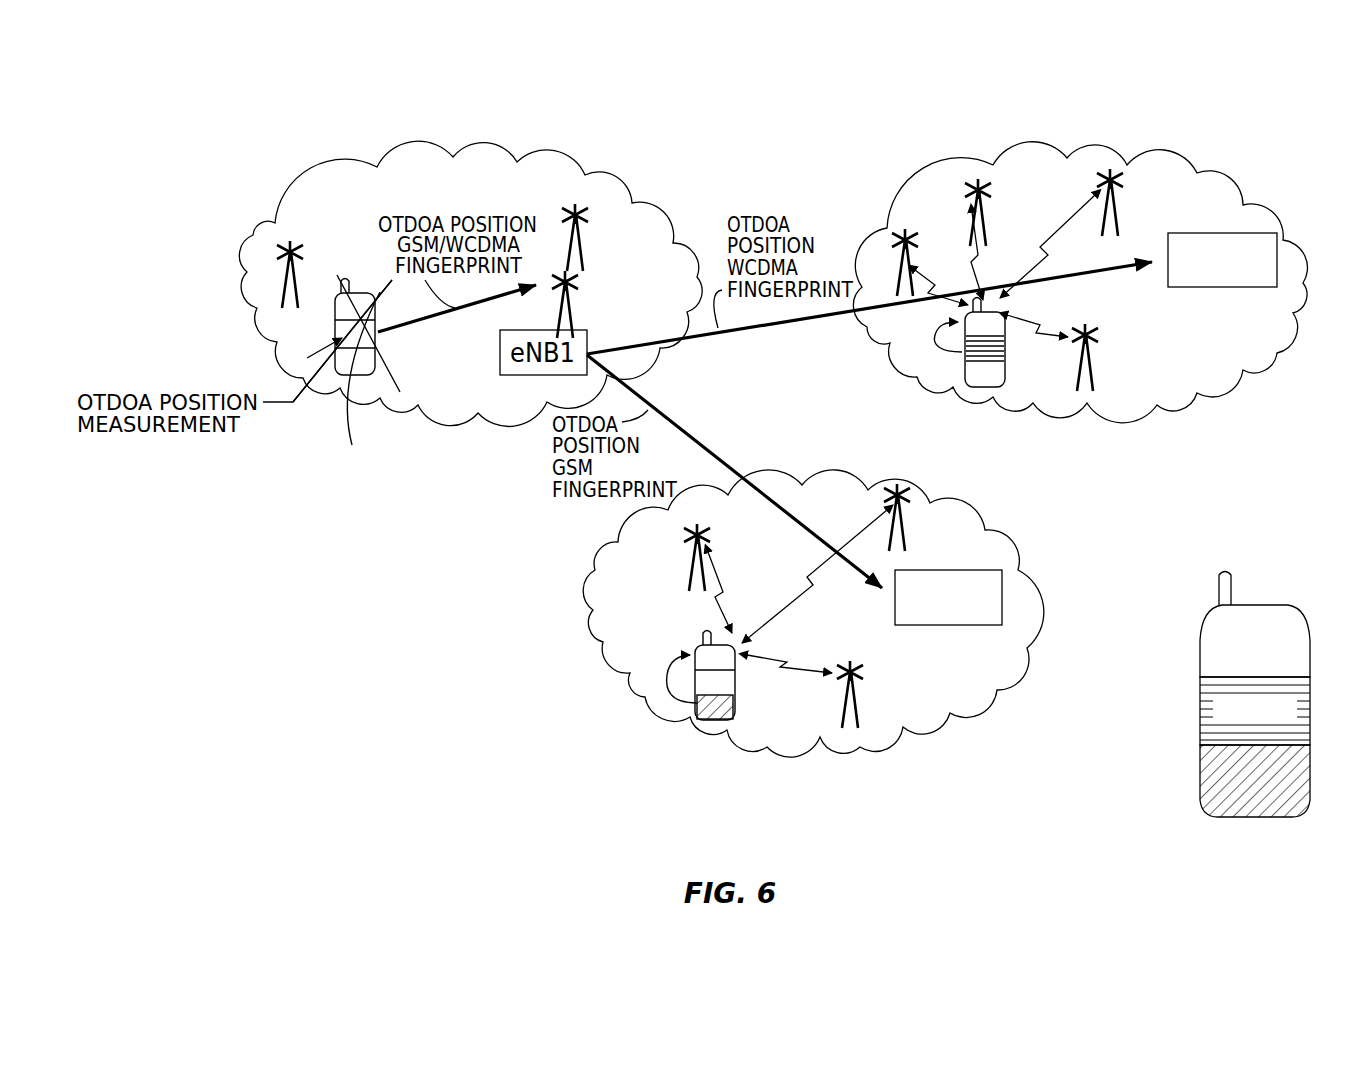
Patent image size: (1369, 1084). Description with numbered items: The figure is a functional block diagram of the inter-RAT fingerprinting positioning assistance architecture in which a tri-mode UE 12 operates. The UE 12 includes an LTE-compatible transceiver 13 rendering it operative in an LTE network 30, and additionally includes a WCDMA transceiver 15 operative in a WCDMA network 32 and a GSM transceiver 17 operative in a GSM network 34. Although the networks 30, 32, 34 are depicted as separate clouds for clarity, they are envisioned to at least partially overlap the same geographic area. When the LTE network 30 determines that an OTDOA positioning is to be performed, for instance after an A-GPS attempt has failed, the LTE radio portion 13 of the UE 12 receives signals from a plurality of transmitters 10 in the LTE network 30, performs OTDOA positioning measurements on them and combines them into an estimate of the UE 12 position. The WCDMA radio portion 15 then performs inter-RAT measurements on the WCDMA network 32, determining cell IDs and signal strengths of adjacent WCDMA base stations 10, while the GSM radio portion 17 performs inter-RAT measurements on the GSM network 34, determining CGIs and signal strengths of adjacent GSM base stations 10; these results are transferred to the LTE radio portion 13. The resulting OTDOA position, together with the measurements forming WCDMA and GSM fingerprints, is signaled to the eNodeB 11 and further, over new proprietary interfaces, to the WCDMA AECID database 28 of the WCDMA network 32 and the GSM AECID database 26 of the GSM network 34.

The transmitters 10 is at (282, 262).
The eNodeB 11 is at (578, 320).
The UE 12 is at (801, 546).
The LTE-compatible transceiver 13 is at (1255, 625).
The WCDMA transceiver 15 is at (1255, 711).
The GSM transceiver 17 is at (1255, 781).
The GSM AECID database 26 is at (1002, 583).
The WCDMA AECID database 28 is at (1278, 247).
The LTE network 30 is at (470, 265).
The WCDMA network 32 is at (1080, 270).
The GSM network 34 is at (813, 628).